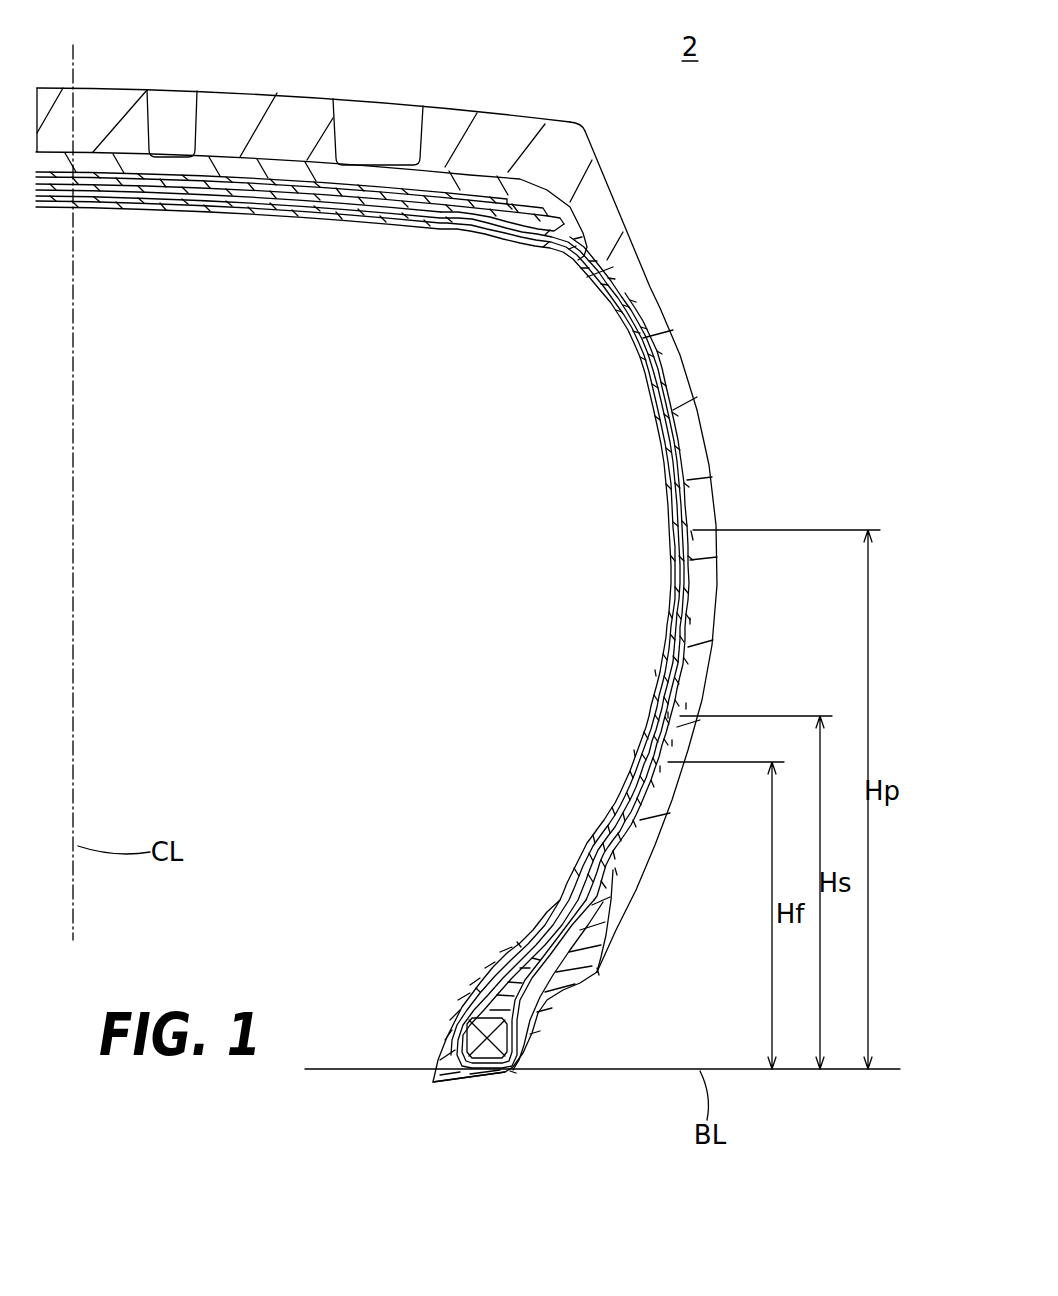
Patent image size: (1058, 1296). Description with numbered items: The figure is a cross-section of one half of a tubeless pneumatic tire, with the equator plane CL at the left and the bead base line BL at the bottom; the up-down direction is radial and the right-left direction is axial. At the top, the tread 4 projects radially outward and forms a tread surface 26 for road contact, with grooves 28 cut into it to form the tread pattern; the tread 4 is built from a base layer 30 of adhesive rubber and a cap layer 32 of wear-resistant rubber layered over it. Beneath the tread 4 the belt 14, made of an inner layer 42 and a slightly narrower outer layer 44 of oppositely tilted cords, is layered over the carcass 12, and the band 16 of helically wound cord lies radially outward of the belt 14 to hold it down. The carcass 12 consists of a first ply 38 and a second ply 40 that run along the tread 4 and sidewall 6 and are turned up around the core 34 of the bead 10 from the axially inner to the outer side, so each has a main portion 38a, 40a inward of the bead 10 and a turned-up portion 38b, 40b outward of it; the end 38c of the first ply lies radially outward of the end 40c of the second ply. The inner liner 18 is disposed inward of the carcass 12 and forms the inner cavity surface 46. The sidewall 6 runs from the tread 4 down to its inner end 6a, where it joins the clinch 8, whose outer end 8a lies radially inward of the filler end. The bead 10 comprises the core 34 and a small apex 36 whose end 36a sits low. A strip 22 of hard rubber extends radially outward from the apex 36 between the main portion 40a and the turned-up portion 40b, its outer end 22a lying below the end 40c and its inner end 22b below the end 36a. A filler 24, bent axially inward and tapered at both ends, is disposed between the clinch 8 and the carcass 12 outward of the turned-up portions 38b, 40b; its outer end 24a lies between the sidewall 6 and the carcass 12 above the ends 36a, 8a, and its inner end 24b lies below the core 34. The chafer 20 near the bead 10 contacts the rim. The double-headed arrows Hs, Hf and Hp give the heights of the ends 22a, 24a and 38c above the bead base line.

The tread 4 is at (442, 38).
The sidewall 6 is at (670, 358).
The clinch 8 is at (597, 928).
The bead 10 is at (606, 992).
The carcass 12 is at (210, 293).
The belt 14 is at (246, 290).
The band 16 is at (358, 187).
The inner liner 18 is at (472, 233).
The chafer 20 is at (443, 1076).
The strip 22 is at (490, 972).
The filler 24 is at (565, 967).
The tread surface 26 is at (238, 88).
The groove 28 is at (153, 118).
The base layer 30 is at (497, 183).
The cap layer 32 is at (450, 128).
The core 34 is at (503, 1035).
The apex 36 is at (500, 1010).
The first ply 38 is at (147, 197).
The second ply 40 is at (193, 197).
The inner layer 42 is at (255, 193).
The outer layer 44 is at (310, 190).
The inner cavity surface 46 is at (413, 224).
The inner end of sidewall 6a is at (600, 971).
The outer end of clinch 8a is at (617, 872).
The outer end of strip 22a is at (668, 714).
The inner end of strip 22b is at (478, 990).
The outer end of filler 24a is at (660, 768).
The inner end of filler 24b is at (513, 1073).
The end of apex 36a is at (519, 945).
The main portion of first ply 38a is at (634, 752).
The turned-up portion of first ply 38b is at (672, 742).
The end of turned-up portion of first ply 38c is at (693, 530).
The main portion of second ply 40a is at (655, 672).
The turned-up portion of second ply 40b is at (686, 706).
The end of turned-up portion of second ply 40c is at (690, 618).